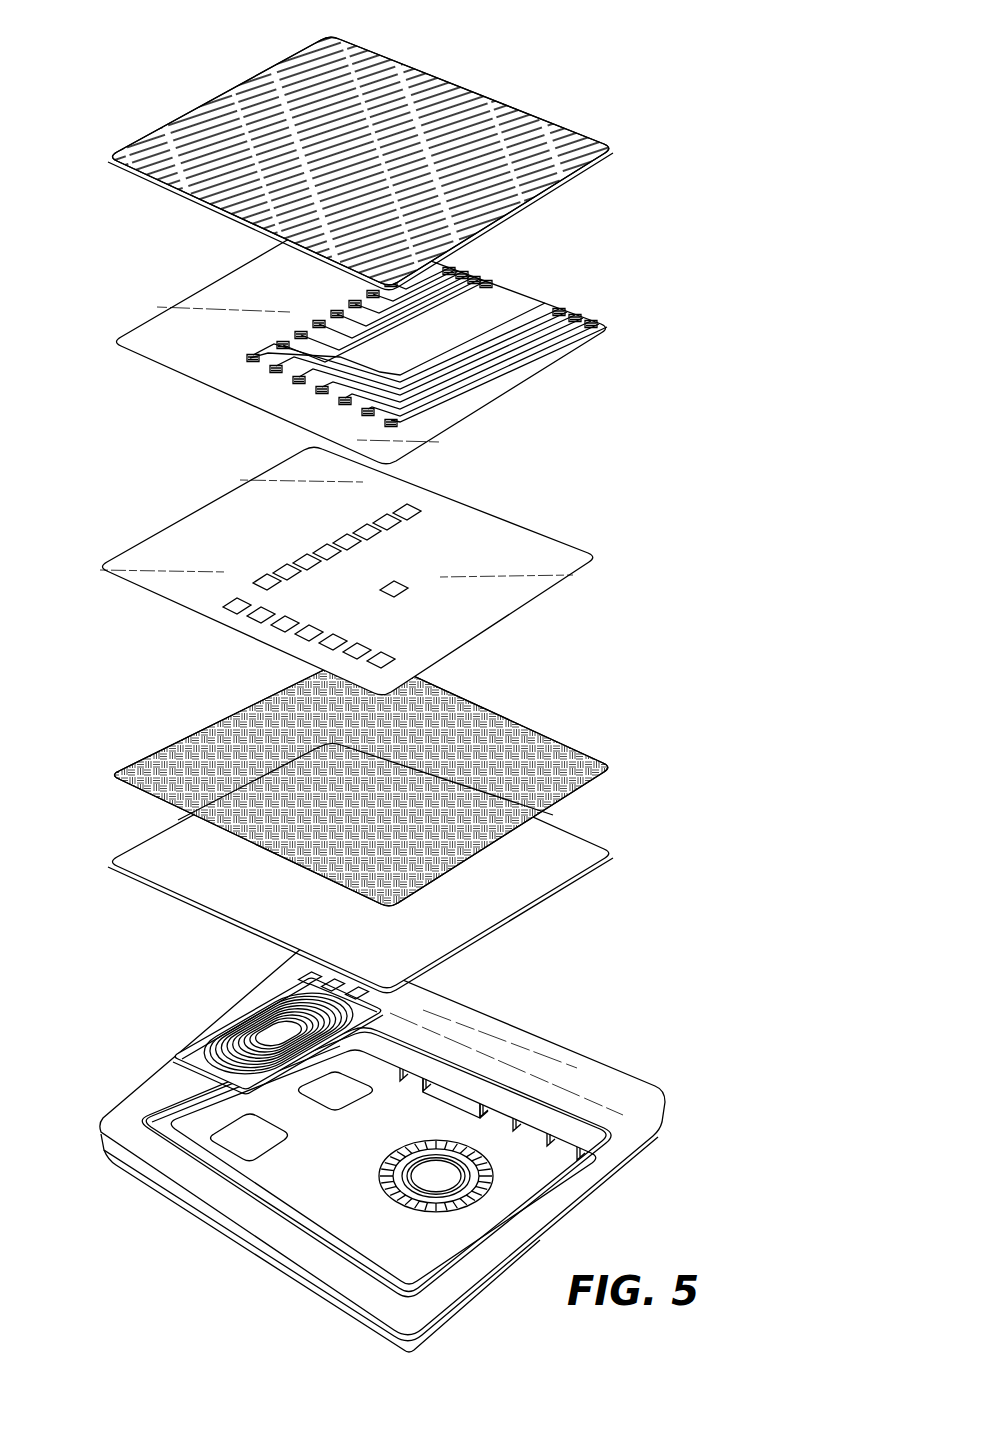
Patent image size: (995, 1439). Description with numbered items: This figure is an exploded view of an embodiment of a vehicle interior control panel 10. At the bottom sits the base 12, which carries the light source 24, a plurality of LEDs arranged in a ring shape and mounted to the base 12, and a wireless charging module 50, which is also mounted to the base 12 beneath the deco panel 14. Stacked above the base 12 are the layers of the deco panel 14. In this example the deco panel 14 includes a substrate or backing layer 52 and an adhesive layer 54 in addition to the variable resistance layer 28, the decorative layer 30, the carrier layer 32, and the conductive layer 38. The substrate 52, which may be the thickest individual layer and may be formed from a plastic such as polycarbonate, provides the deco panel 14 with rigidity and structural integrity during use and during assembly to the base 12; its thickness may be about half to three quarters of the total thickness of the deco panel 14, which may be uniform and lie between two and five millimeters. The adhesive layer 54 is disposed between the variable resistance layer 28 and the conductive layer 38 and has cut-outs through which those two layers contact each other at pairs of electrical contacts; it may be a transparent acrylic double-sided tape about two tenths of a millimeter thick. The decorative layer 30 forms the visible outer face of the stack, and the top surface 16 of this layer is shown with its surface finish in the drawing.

The control panel 10 is at (64, 102).
The base 12 is at (650, 1077).
The deco panel 14 is at (83, 149).
The top surface / cover graphic 16 is at (577, 143).
The light source 24 is at (383, 1178).
The variable resistance layer 28 is at (598, 780).
The decorative layer 30 is at (390, 163).
The carrier layer 32 is at (395, 343).
The conductive layer 38 is at (530, 362).
The wireless charging module 50 is at (190, 1050).
The substrate 52 is at (590, 870).
The adhesive layer 54 is at (583, 568).